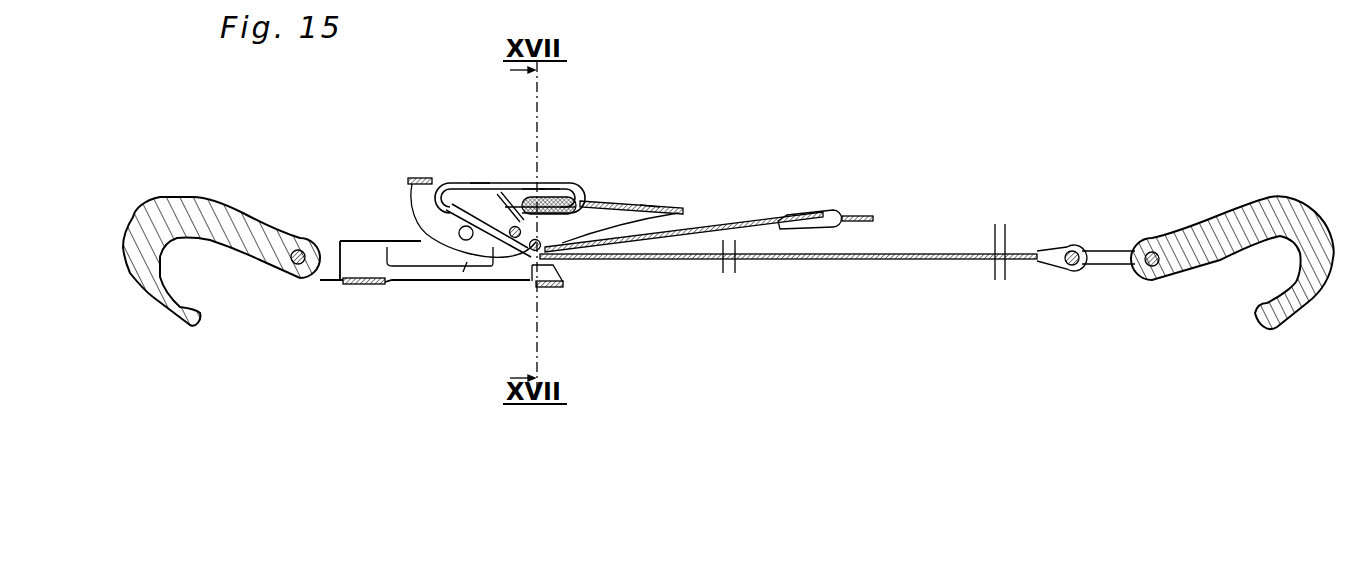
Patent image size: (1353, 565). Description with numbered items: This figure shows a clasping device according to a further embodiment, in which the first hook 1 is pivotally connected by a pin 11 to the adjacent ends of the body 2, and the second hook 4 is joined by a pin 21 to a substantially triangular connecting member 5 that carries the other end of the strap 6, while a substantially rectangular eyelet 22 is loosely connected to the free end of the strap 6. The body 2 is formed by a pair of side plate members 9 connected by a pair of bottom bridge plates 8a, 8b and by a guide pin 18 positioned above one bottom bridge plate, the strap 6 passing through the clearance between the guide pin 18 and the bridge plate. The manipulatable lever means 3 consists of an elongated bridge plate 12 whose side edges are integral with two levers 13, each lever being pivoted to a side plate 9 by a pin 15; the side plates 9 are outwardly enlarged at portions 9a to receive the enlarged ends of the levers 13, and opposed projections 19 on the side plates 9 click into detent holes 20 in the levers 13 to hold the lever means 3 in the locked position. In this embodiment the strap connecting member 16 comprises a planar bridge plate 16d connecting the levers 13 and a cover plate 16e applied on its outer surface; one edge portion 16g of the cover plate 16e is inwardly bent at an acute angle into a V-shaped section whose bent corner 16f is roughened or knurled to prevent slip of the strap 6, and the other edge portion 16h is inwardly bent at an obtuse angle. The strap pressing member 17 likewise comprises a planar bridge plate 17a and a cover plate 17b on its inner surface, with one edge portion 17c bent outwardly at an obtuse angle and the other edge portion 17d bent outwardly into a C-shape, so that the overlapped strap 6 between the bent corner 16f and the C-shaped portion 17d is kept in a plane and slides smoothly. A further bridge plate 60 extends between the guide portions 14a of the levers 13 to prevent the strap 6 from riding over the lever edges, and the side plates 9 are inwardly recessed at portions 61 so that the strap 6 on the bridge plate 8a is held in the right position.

The first hook 1 is at (215, 207).
The body 2 is at (360, 236).
The manipulatable lever means 3 is at (690, 203).
The second hook 4 is at (1232, 213).
The connecting member 5 is at (1100, 265).
The strap 6 is at (880, 262).
The bottom bridge plate 8a is at (550, 287).
The bottom bridge plate 8b is at (357, 285).
The side plate member 9 is at (435, 253).
The outwardly enlarged portion 9a is at (483, 270).
The pin 11 is at (295, 263).
The elongated bridge plate 12 is at (680, 210).
The lever 13 is at (648, 207).
The guide portion 14a is at (430, 233).
The pin 15 is at (463, 272).
The strap connecting member 16 is at (448, 270).
The planar bridge plate 16d is at (470, 200).
The cover plate 16e is at (443, 188).
The bent corner 16f is at (441, 192).
The edge portion 16g is at (425, 266).
The edge portion 16h is at (478, 182).
The strap pressing member 17 is at (562, 190).
The planar bridge plate 17a is at (530, 184).
The cover plate 17b is at (541, 186).
The edge portion 17c is at (508, 190).
The edge portion 17d is at (592, 202).
The guide pin 18 is at (566, 258).
The projection 19 is at (507, 270).
The detent hole 20 is at (530, 270).
The pin 21 is at (1156, 267).
The eyelet 22 is at (870, 216).
The further bridge plate 60 is at (410, 181).
The recessed portion 61 is at (558, 268).